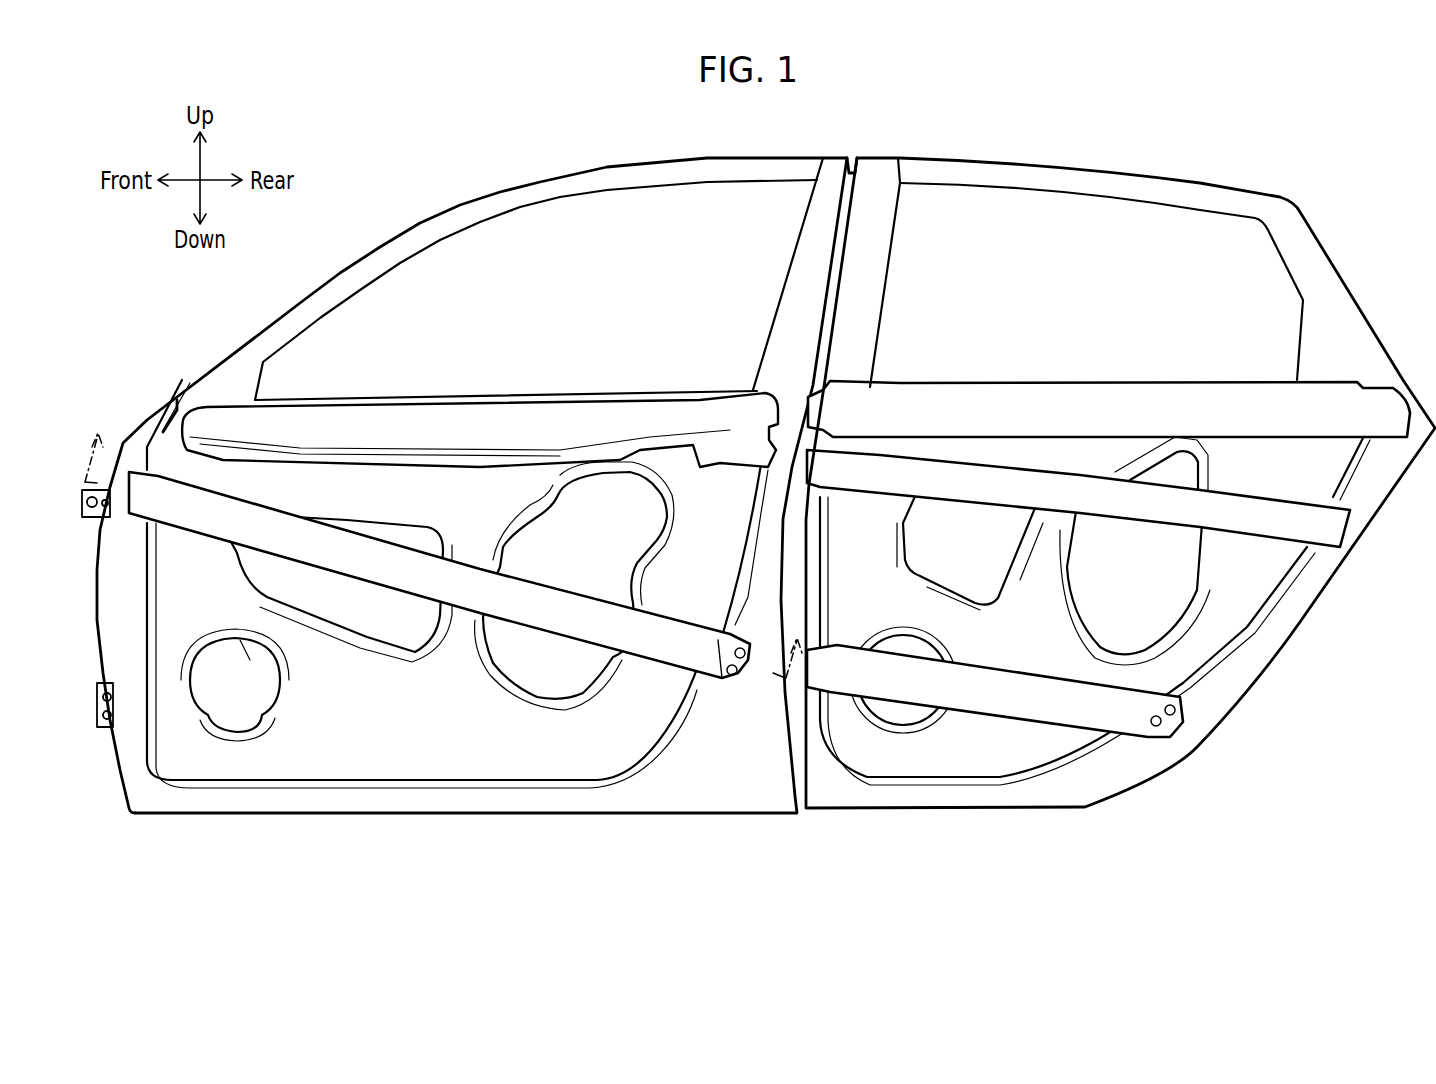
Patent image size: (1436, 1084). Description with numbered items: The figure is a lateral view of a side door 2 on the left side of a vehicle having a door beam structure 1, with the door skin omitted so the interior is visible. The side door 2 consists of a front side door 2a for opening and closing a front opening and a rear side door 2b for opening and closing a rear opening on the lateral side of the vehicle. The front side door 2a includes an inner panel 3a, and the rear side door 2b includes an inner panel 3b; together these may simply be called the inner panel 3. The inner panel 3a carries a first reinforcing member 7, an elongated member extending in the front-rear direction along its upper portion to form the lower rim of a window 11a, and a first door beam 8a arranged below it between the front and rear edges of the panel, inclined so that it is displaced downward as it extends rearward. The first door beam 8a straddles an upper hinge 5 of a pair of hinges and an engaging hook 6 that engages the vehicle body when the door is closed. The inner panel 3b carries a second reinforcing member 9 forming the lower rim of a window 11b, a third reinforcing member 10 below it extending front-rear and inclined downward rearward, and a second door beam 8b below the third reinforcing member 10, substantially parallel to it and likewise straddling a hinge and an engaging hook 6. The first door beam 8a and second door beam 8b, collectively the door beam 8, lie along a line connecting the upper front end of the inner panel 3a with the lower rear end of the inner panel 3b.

The door beam structure 1 is at (749, 528).
The side door 2 is at (749, 528).
The front side door 2a is at (460, 509).
The rear side door 2b is at (1120, 506).
The inner panel 3 is at (457, 631).
The inner panel 3a is at (303, 743).
The inner panel 3b is at (1227, 603).
The upper hinge 5 is at (93, 520).
The engaging hook 6 is at (749, 662).
The first reinforcing member 7 is at (547, 432).
The door beam 8 is at (439, 598).
The first door beam 8a is at (350, 553).
The second door beam 8b is at (967, 693).
The second reinforcing member 9 is at (975, 410).
The third reinforcing member 10 is at (1077, 495).
The window 11a is at (613, 267).
The window 11b is at (1033, 260).